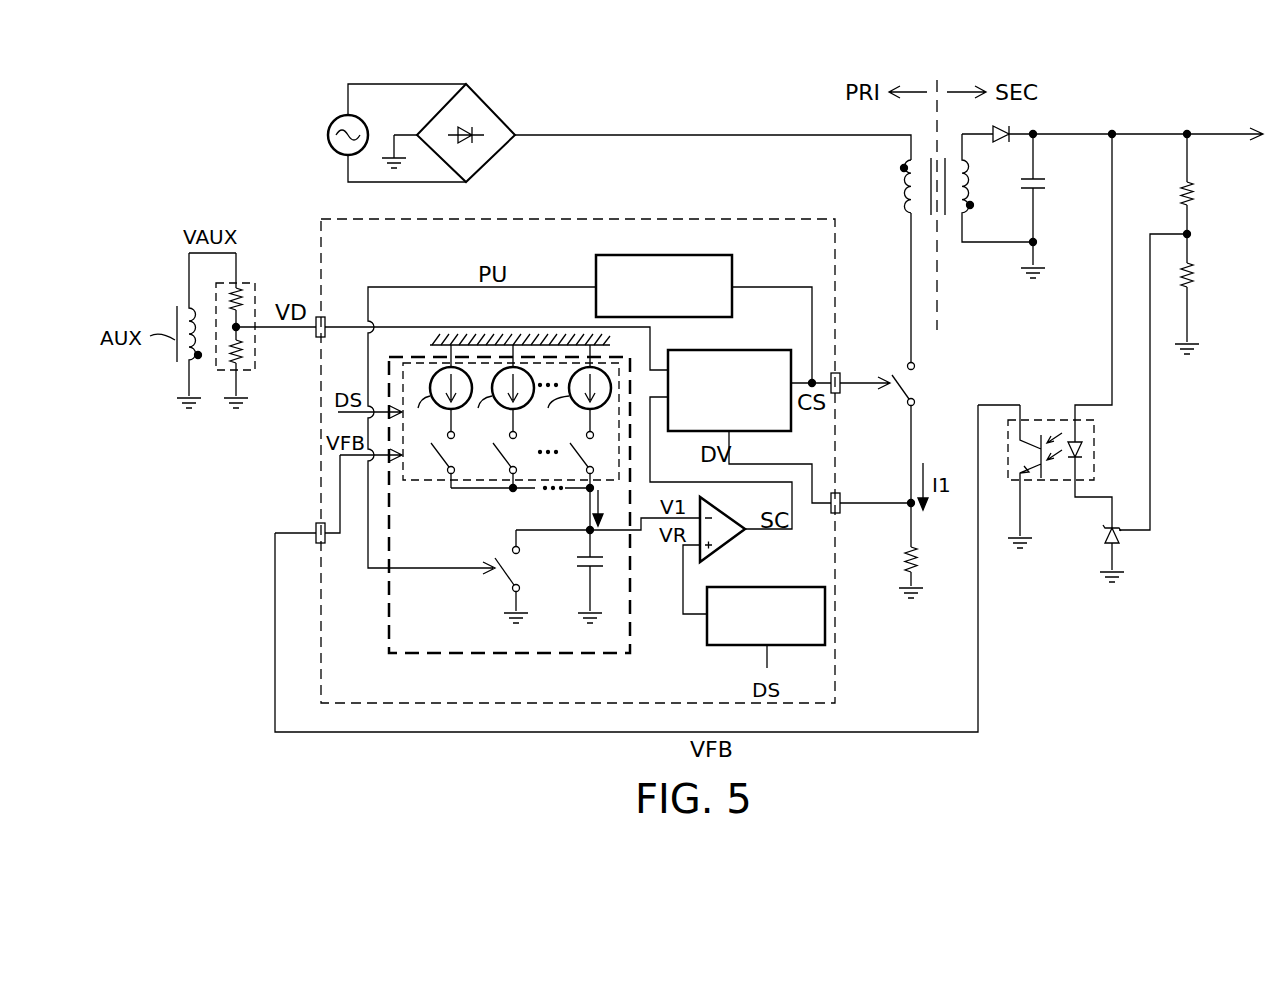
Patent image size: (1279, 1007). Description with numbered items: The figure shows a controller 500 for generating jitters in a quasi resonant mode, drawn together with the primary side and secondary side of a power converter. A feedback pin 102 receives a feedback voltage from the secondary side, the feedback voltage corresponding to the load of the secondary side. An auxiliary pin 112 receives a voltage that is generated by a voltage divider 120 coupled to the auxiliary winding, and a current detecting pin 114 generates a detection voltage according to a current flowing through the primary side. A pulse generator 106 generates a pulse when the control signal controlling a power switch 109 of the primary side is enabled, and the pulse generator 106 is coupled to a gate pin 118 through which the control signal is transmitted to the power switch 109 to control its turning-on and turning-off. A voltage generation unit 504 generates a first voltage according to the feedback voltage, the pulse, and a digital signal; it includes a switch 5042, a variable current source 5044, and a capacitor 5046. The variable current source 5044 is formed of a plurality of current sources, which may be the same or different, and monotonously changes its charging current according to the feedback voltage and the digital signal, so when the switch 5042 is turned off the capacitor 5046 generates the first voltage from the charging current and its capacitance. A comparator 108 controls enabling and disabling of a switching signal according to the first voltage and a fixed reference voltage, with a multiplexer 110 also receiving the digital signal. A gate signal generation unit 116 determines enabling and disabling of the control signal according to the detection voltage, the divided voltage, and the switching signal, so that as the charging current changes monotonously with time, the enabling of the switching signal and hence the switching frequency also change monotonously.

The controller 500 is at (628, 219).
The pulse generator 106 is at (681, 255).
The gate signal generation unit 116 is at (745, 350).
The gate pin 118 is at (841, 375).
The power switch 109 is at (930, 384).
The current detecting pin 114 is at (840, 513).
The auxiliary pin 112 is at (316, 337).
The voltage divider 120 is at (255, 283).
The feedback pin 102 is at (316, 525).
The voltage generation unit 504 is at (389, 613).
The variable current source 5044 is at (427, 480).
The switch 5042 is at (490, 580).
The capacitor 5046 is at (578, 560).
The comparator 108 is at (731, 543).
The multiplexer 110 is at (775, 587).